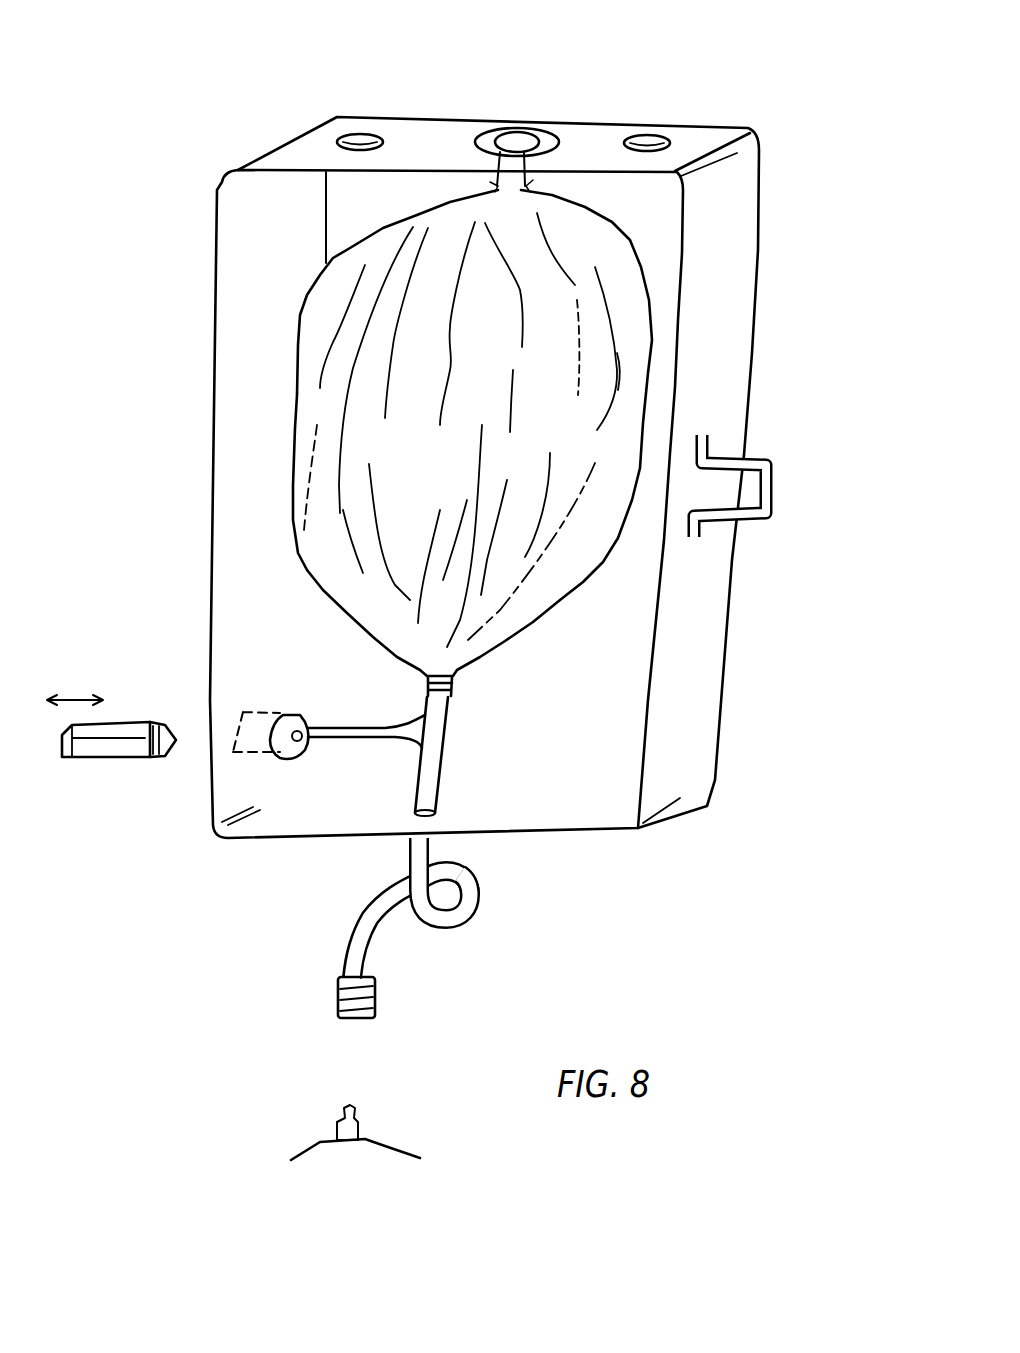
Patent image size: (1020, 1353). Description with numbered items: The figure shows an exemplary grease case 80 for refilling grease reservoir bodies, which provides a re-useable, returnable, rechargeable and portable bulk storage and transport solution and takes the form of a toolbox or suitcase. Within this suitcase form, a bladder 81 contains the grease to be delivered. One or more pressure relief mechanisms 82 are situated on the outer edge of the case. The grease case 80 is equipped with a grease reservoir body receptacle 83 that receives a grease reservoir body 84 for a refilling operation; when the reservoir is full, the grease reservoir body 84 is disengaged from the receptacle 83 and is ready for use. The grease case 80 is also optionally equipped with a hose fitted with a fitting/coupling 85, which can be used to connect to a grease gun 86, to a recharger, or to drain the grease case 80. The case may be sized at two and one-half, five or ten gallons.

The grease case 80 is at (420, 465).
The bladder 81 is at (650, 363).
The pressure relief mechanism 82 is at (521, 113).
The grease reservoir body receptacle 83 is at (252, 692).
The grease reservoir body 84 is at (130, 770).
The fitting/coupling 85 is at (384, 932).
The grease gun 86 is at (372, 1118).